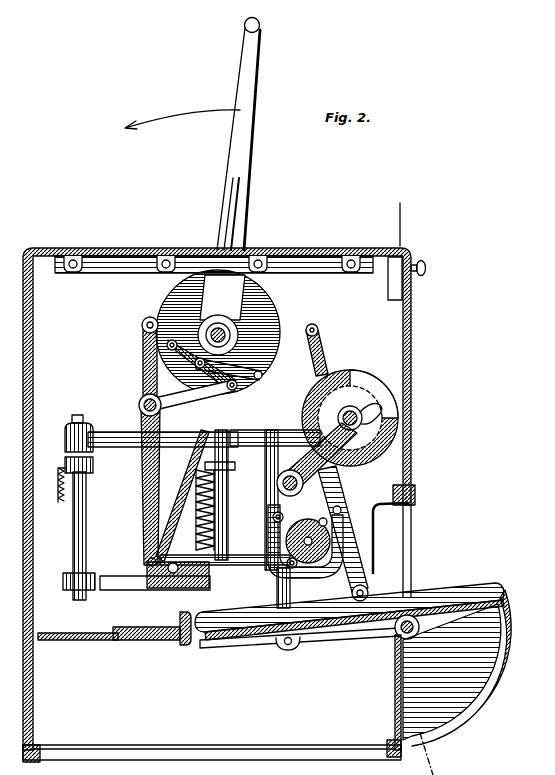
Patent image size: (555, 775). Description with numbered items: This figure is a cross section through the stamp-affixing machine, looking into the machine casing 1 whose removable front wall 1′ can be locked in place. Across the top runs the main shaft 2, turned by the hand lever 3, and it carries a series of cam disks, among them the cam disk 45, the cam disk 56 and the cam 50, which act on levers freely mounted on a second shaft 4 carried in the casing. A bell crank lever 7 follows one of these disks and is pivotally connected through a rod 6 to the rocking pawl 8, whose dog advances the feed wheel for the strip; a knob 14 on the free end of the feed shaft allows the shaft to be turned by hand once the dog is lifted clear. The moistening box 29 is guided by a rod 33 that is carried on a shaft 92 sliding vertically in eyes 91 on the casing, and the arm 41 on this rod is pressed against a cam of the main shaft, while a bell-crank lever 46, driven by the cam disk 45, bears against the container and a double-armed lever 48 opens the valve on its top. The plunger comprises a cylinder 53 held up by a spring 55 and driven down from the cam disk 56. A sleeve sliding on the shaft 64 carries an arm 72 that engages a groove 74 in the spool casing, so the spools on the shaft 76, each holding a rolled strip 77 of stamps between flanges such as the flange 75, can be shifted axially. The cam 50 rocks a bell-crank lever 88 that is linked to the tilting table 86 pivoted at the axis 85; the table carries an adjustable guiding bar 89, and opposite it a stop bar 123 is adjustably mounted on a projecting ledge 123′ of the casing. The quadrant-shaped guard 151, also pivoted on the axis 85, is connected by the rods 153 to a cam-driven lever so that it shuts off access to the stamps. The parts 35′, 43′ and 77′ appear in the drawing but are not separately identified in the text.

The machine casing 1 is at (30, 405).
The front wall of the casing 1′ is at (411, 397).
The shaft 2 is at (275, 324).
The hand lever 3 is at (240, 143).
The shaft 4 is at (139, 405).
The rod 6 is at (259, 556).
The bell crank lever 7 is at (142, 386).
The rocking pawl 8 is at (307, 553).
The knob 14 is at (305, 548).
The box 29 is at (204, 495).
The rod 33 is at (120, 433).
The plate 35′ is at (155, 592).
The arm 41 is at (228, 432).
The plate 43′ is at (218, 581).
The cam disk 45 is at (272, 313).
The bell-crank lever 46 is at (142, 375).
The double-armed lever 48 is at (142, 357).
The cam 50 is at (180, 300).
The cylinder 53 is at (222, 491).
The spring 55 is at (206, 518).
The cam disk 56 is at (268, 293).
The shaft 64 is at (297, 484).
The arm 72 is at (320, 435).
The groove 74 is at (343, 382).
The flange 75 is at (353, 378).
The shaft 76 is at (356, 410).
The rolled strip 77 is at (378, 452).
The lever pivot 77′ is at (338, 468).
The tilting axis 85 is at (395, 637).
The tilting table 86 is at (246, 642).
The bell-crank lever 88 is at (142, 341).
The guiding bar 89 is at (482, 590).
The eyes 91 is at (93, 466).
The shaft 92 is at (86, 527).
The stop bar 123 is at (156, 640).
The projecting ledge 123′ is at (78, 646).
The quadrant-shaped guard 151 is at (508, 680).
The rods 153 is at (322, 346).